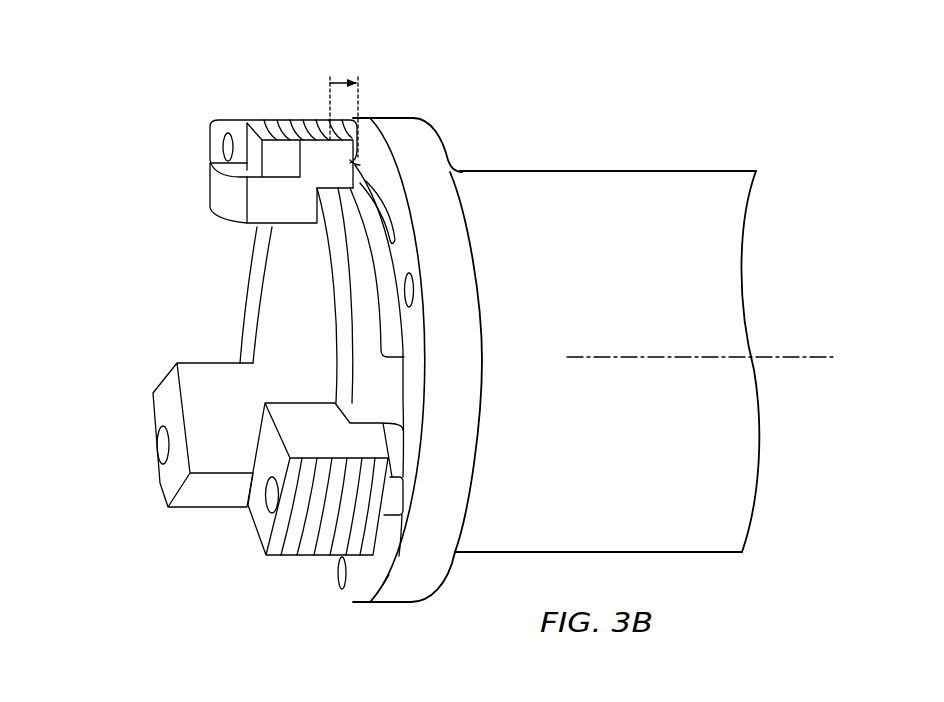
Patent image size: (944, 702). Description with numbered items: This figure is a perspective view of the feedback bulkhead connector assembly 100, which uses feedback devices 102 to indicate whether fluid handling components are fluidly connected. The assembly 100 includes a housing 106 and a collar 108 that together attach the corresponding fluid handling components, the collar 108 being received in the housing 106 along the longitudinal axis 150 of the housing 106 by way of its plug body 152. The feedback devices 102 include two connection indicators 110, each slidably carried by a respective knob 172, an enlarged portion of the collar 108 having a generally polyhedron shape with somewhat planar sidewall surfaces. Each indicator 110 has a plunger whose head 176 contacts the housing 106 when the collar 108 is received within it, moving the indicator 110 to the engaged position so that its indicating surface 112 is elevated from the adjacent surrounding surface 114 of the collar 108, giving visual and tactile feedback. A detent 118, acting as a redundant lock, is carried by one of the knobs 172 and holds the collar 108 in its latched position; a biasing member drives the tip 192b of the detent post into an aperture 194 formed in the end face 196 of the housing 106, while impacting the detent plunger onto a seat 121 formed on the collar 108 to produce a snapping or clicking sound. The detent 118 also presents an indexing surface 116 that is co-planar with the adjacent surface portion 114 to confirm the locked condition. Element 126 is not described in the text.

The feedback bulkhead connector assembly 100 is at (160, 90).
The feedback device 102 is at (206, 121).
The housing 106 is at (722, 170).
The collar 108 is at (232, 262).
The connection indicator 110 is at (167, 488).
The indicating surface 112 is at (156, 447).
The adjacent surrounding surface 114 is at (227, 187).
The indexing surface 116 is at (218, 141).
The detent 118 is at (227, 108).
The seat 121 is at (278, 174).
The flange 126 is at (467, 170).
The longitudinal axis 150 is at (797, 357).
The plug body 152 is at (362, 197).
The knob 172 is at (192, 370).
The head 176 is at (400, 512).
The tip 192b is at (368, 137).
The aperture 194 is at (404, 296).
The end face 196 is at (379, 594).